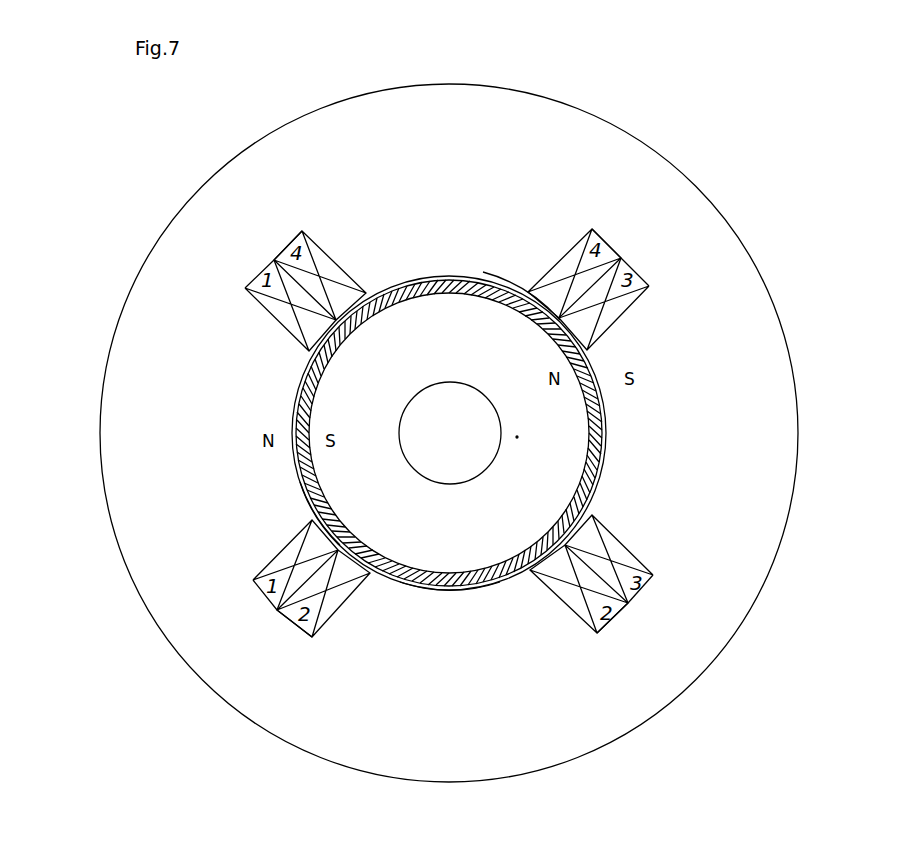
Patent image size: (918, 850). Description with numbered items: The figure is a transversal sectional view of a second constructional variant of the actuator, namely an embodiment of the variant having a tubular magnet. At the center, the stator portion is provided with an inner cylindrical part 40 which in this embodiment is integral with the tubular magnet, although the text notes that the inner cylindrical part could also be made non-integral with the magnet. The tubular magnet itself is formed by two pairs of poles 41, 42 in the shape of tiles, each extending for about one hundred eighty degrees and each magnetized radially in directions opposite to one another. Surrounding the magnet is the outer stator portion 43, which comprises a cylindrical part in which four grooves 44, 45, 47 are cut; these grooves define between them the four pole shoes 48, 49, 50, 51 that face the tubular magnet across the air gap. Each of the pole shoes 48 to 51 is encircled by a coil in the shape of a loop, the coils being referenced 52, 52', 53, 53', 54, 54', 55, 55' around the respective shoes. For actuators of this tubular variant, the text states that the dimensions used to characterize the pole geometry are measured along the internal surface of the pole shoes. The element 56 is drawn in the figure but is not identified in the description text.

The inner cylindrical part 40 is at (517, 437).
The pair of poles 41 is at (483, 272).
The pair of poles 42 is at (300, 482).
The outer stator portion 43 is at (658, 582).
The groove 44 is at (622, 258).
The groove 45 is at (622, 628).
The groove 47 is at (272, 260).
The pole shoe 48 is at (610, 460).
The pole shoe 49 is at (430, 595).
The pole shoe 50 is at (291, 394).
The pole shoe 51 is at (416, 272).
The coil 52 is at (182, 305).
The coil 52' is at (200, 596).
The coil 53 is at (287, 654).
The coil 53' is at (589, 666).
The coil 54 is at (695, 562).
The coil 54' is at (709, 304).
The coil 55 is at (659, 255).
The coil 55' is at (242, 235).
The stator pole 56 is at (262, 615).